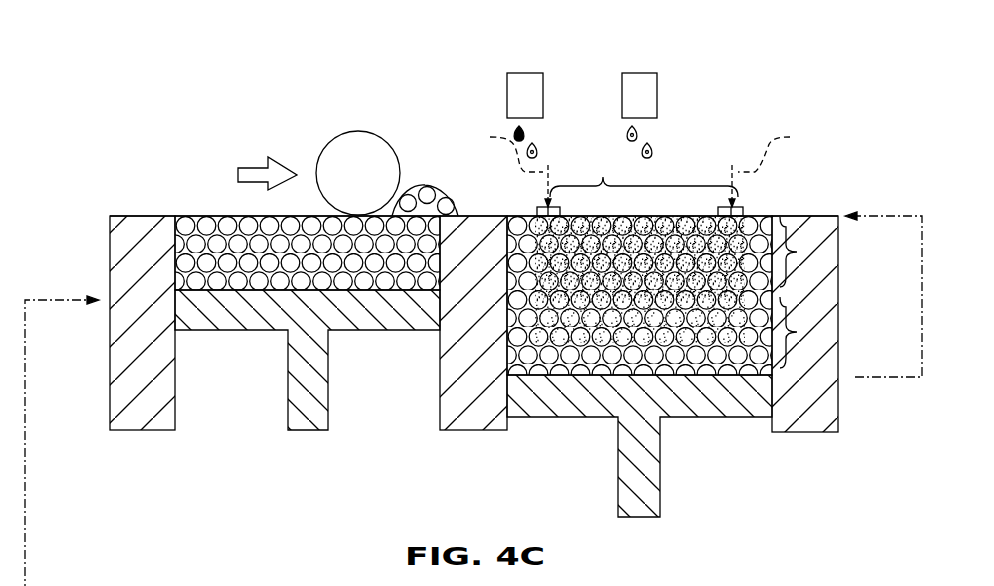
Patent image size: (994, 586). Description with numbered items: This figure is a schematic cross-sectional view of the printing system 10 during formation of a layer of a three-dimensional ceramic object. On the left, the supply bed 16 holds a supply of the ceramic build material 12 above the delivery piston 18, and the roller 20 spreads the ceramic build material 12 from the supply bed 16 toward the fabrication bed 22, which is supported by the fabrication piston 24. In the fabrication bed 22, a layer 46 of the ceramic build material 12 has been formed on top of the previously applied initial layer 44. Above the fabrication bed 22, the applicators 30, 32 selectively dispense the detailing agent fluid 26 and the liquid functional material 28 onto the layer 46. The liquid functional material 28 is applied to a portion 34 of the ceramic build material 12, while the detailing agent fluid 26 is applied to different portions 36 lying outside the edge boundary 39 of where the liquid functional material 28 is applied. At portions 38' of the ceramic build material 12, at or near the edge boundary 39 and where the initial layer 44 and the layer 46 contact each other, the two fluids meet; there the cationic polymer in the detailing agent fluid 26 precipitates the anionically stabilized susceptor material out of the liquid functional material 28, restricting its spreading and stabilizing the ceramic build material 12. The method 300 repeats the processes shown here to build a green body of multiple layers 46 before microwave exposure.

The printing system 10 is at (158, 145).
The ceramic build material 12 is at (203, 225).
The supply bed 16 is at (180, 252).
The delivery piston 18 is at (307, 407).
The roller 20 is at (355, 157).
The fabrication bed 22 is at (537, 355).
The fabrication piston 24 is at (638, 483).
The detailing agent fluid 26 is at (527, 132).
The liquid functional material 28 is at (647, 152).
The applicator 30 is at (525, 90).
The applicator 32 is at (640, 90).
The portion 34 is at (641, 178).
The portion 36 is at (545, 200).
The portions 38' is at (639, 446).
The edge boundary 39 is at (640, 147).
The initial layer 44 is at (682, 332).
The layer 46 is at (682, 259).
The method 300 is at (887, 377).